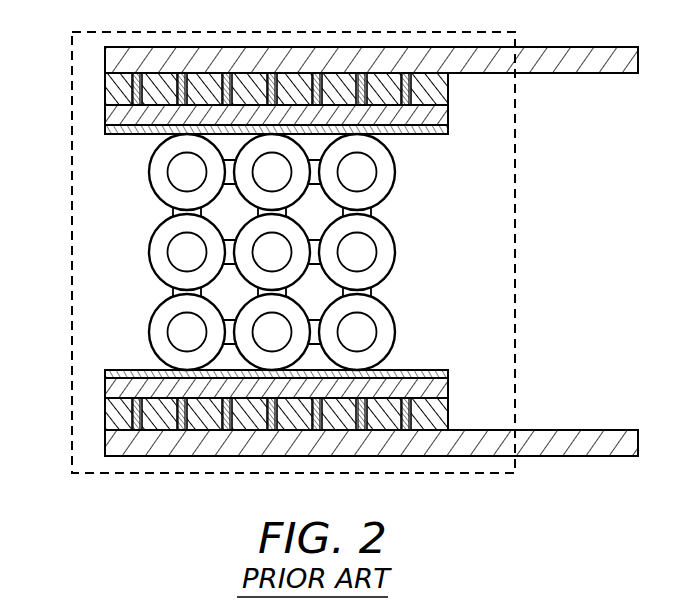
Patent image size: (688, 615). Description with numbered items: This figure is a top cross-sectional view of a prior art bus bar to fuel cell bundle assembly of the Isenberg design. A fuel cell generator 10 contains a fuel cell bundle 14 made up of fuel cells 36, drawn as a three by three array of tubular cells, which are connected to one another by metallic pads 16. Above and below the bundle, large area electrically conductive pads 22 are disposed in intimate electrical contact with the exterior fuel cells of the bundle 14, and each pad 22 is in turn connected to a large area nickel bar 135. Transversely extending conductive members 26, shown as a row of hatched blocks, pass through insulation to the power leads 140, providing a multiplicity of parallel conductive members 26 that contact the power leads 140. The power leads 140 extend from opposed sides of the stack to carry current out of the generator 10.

The fuel cell generator 10 is at (583, 237).
The fuel cell bundle 14 is at (258, 252).
The metallic pads 16 is at (226, 252).
The electrically conductive pads 22 is at (417, 136).
The conductive members 26 is at (105, 92).
The fuel cells 36 is at (396, 313).
The nickel bar 135 is at (448, 114).
The power leads 140 is at (585, 74).